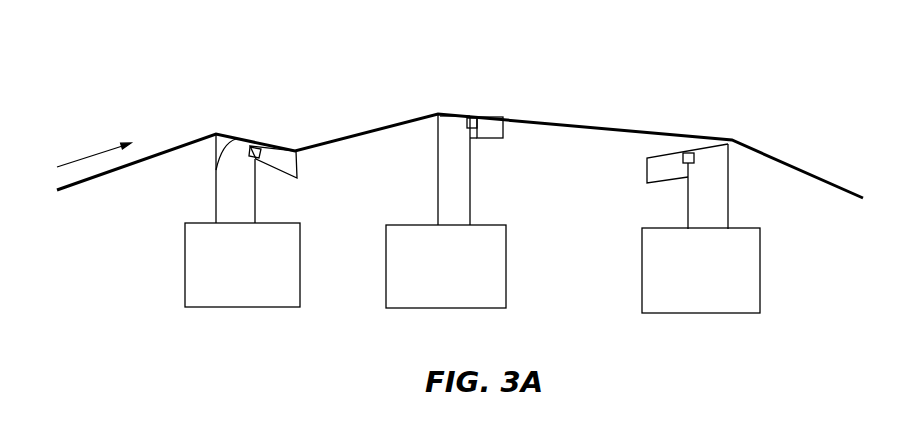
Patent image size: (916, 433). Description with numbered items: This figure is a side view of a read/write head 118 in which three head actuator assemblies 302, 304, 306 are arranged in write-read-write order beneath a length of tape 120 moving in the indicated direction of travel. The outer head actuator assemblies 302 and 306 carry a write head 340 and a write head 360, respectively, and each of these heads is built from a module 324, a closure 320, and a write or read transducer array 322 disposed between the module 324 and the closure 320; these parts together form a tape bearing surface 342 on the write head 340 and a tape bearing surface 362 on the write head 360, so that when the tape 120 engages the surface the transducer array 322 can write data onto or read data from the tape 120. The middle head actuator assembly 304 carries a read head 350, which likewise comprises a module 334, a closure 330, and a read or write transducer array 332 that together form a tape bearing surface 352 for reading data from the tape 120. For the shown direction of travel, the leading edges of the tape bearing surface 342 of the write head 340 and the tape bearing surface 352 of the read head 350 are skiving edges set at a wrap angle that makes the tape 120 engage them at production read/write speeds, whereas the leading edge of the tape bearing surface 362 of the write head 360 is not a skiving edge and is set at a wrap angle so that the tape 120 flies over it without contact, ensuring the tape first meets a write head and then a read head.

The read/write head 118 is at (126, 64).
The tape 120 is at (827, 179).
The head actuator assembly 302 is at (228, 300).
The head actuator assembly 304 is at (497, 306).
The head actuator assembly 306 is at (685, 307).
The closure 320 is at (297, 168).
The write or read transducer array 322 is at (258, 158).
The module 324 is at (216, 207).
The closure 330 is at (503, 130).
The read or write transducer array 332 is at (477, 128).
The module 334 is at (438, 172).
The write head 340 is at (255, 146).
The tape bearing surface 342 is at (216, 172).
The read head 350 is at (476, 127).
The tape bearing surface 352 is at (455, 117).
The write head 360 is at (671, 148).
The tape bearing surface 362 is at (665, 157).